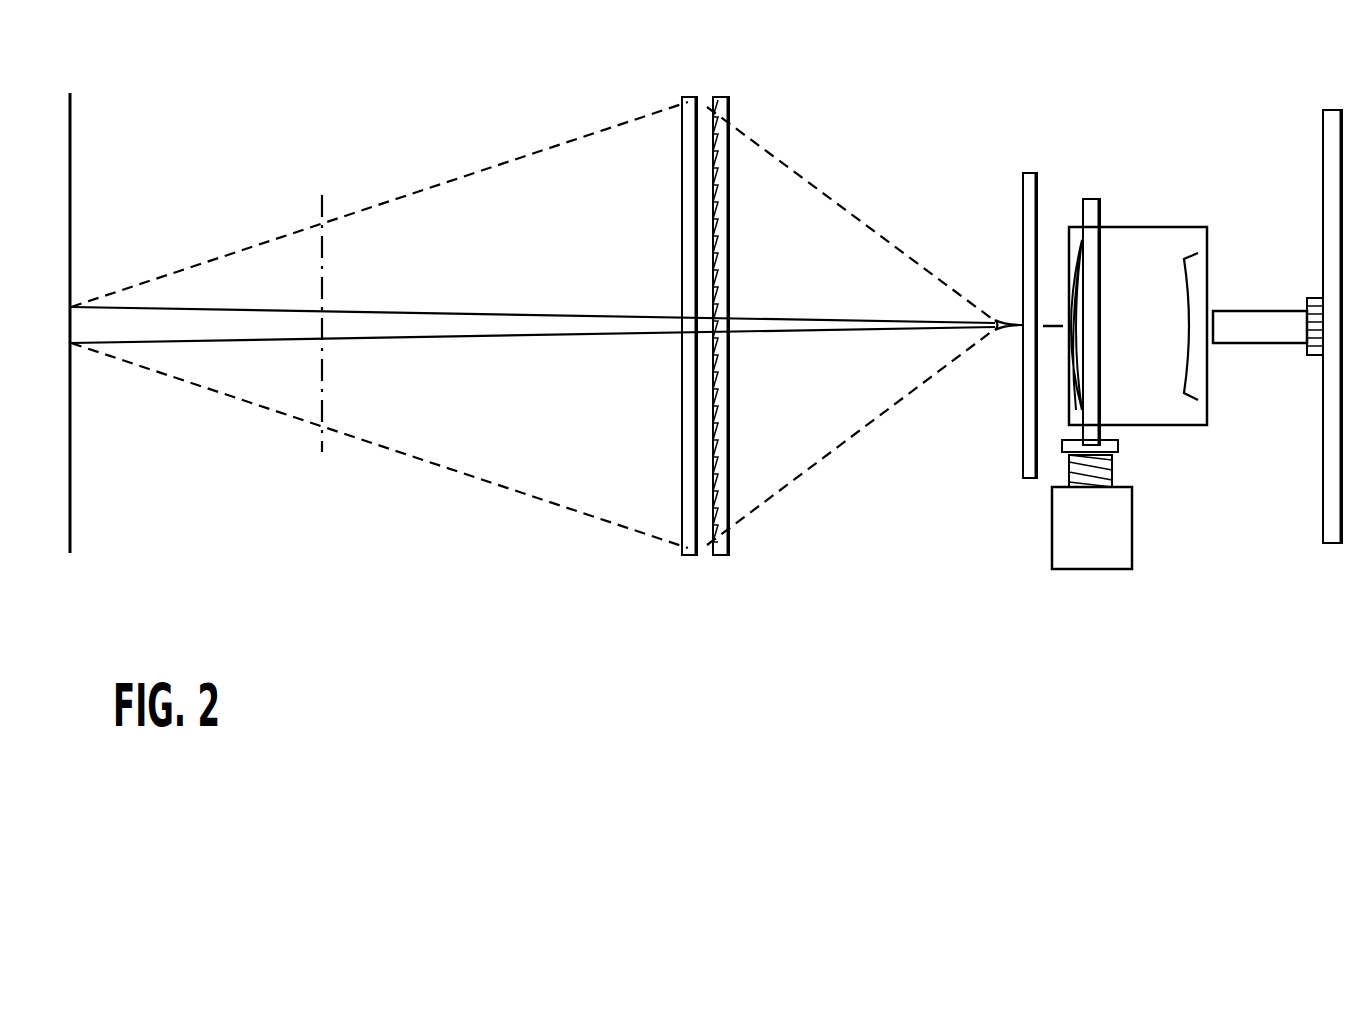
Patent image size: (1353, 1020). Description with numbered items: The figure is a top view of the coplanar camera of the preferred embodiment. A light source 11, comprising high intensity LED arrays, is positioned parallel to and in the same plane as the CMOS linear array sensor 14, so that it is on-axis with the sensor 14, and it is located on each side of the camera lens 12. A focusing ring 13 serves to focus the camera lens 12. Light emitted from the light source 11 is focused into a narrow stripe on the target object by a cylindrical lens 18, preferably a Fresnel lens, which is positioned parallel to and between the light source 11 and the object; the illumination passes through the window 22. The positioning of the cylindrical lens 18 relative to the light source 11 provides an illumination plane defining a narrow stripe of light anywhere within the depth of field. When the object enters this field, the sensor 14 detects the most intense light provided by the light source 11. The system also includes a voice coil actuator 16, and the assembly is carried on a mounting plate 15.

The light source 11 is at (1030, 172).
The camera lens 12 is at (1153, 227).
The focusing ring 13 is at (1093, 198).
The linear array sensor 14 is at (1280, 311).
The mounting plate 15 is at (1333, 543).
The voice coil actuator 16 is at (1090, 569).
The cylindrical lens 18 is at (718, 555).
The window 22 is at (690, 97).